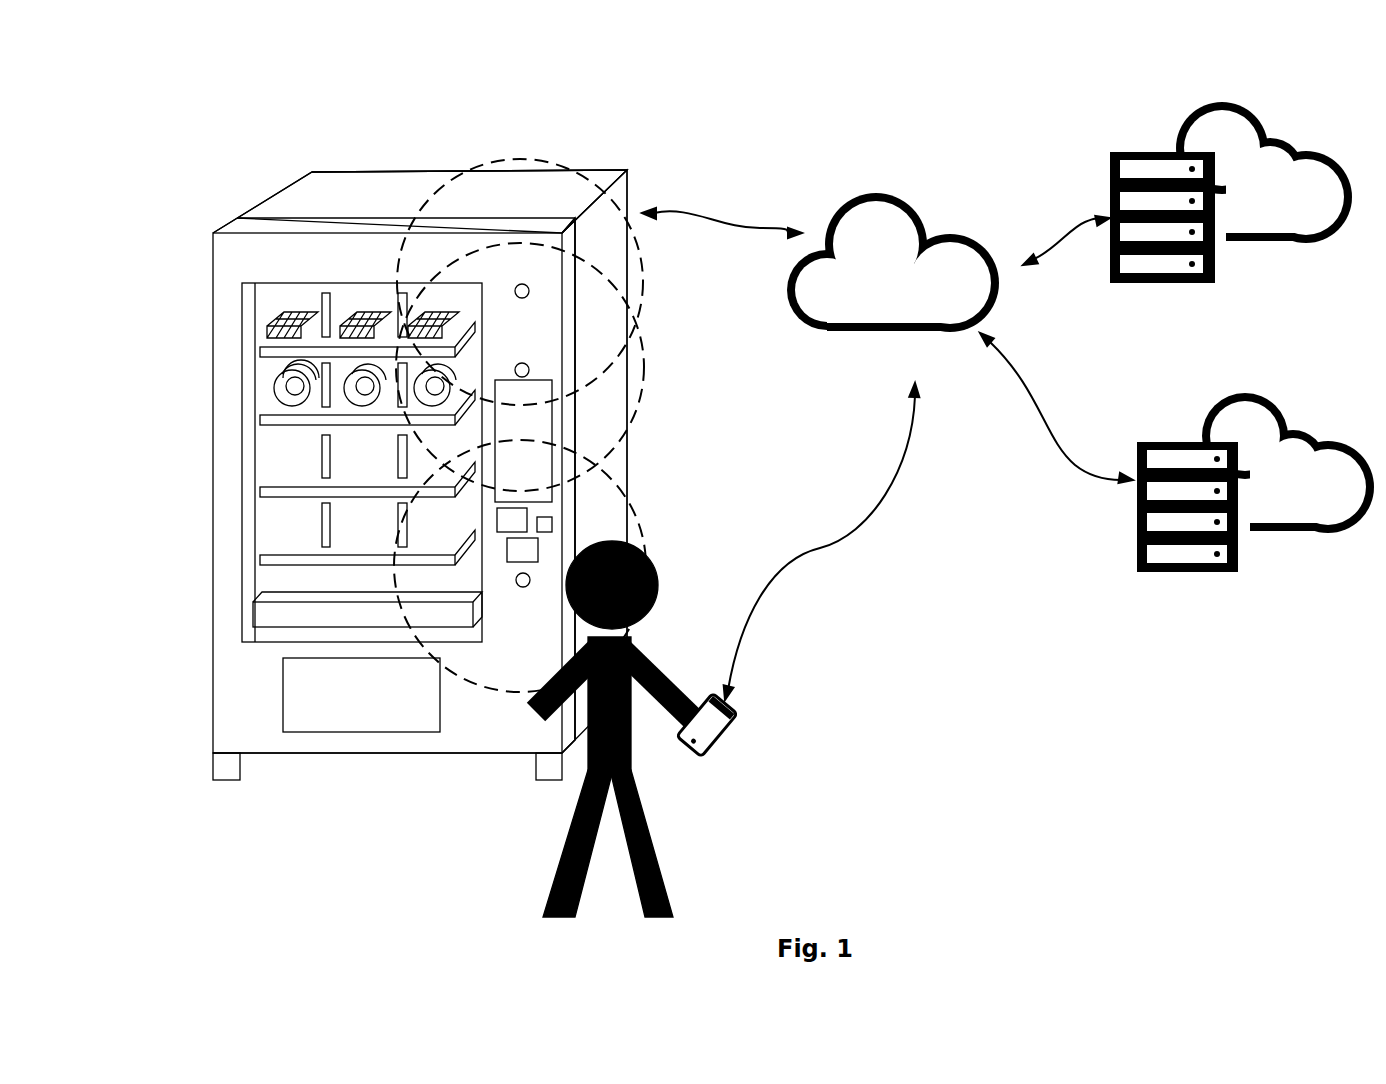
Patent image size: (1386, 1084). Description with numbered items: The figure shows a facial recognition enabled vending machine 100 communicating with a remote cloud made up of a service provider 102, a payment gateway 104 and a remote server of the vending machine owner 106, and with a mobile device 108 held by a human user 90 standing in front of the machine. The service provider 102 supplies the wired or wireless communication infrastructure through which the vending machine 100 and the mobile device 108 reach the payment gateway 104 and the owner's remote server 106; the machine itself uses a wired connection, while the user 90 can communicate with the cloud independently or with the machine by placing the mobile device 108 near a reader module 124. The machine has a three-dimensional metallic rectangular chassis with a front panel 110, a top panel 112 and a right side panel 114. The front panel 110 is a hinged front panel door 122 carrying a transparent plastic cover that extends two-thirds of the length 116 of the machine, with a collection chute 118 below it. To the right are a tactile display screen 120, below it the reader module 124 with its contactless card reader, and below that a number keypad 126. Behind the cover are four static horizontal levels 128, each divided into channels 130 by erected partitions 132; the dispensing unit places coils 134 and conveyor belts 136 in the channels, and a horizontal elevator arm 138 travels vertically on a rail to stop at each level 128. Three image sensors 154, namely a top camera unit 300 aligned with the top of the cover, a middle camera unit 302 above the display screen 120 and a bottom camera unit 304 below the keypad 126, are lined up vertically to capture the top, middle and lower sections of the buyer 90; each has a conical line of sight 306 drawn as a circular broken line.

The human user 90 is at (653, 848).
The vending machine 100 is at (236, 112).
The service provider 102 is at (897, 284).
The payment gateway 104 is at (1282, 207).
The remote server of the vending machine owner 106 is at (1317, 487).
The mobile device 108 is at (713, 732).
The front panel 110 is at (473, 722).
The top panel 112 is at (460, 198).
The right side panel 114 is at (610, 260).
The length of the vending machine 116 is at (253, 233).
The collection chute 118 is at (363, 733).
The tactile display screen 120 is at (540, 428).
The front panel door 122 is at (567, 330).
The reader module 124 is at (575, 486).
The number keypad 126 is at (398, 733).
The level 128 is at (283, 555).
The channel 130 is at (288, 525).
The partition 132 is at (318, 457).
The coil 134 is at (272, 387).
The conveyor belt 136 is at (270, 335).
The elevator arm 138 is at (320, 608).
The image sensor 154 is at (553, 523).
The top camera unit 300 is at (522, 284).
The middle camera unit 302 is at (530, 370).
The bottom camera unit 304 is at (523, 588).
The conical line of sight 306 is at (603, 192).